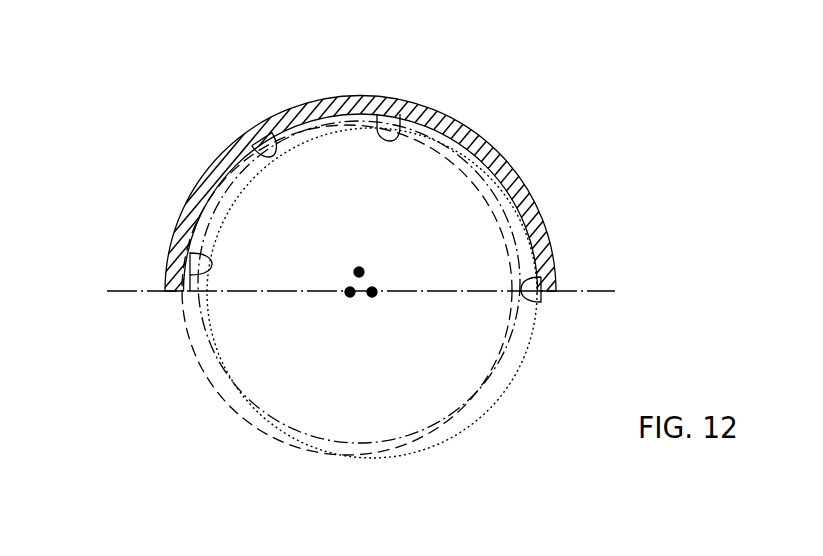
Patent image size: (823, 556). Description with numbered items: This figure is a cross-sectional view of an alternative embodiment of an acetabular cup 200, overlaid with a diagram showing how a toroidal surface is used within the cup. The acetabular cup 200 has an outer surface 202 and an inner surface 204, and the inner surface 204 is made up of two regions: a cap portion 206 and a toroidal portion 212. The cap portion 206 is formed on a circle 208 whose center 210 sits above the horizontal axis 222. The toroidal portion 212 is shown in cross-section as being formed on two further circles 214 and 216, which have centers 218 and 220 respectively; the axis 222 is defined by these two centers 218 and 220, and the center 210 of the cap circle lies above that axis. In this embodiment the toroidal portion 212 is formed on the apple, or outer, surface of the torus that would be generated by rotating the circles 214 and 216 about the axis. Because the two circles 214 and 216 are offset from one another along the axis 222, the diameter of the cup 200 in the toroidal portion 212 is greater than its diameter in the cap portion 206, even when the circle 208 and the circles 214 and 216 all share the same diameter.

The acetabular cup 200 is at (630, 82).
The outer surface 202 is at (318, 89).
The inner surface 204 is at (252, 122).
The cap portion 206 is at (400, 130).
The circle 208 is at (286, 445).
The center 210 is at (359, 272).
The toroidal portion 212 is at (166, 271).
The circle 214 is at (193, 364).
The circle 216 is at (538, 327).
The center 218 is at (350, 292).
The center 220 is at (372, 292).
The axis 222 is at (122, 293).